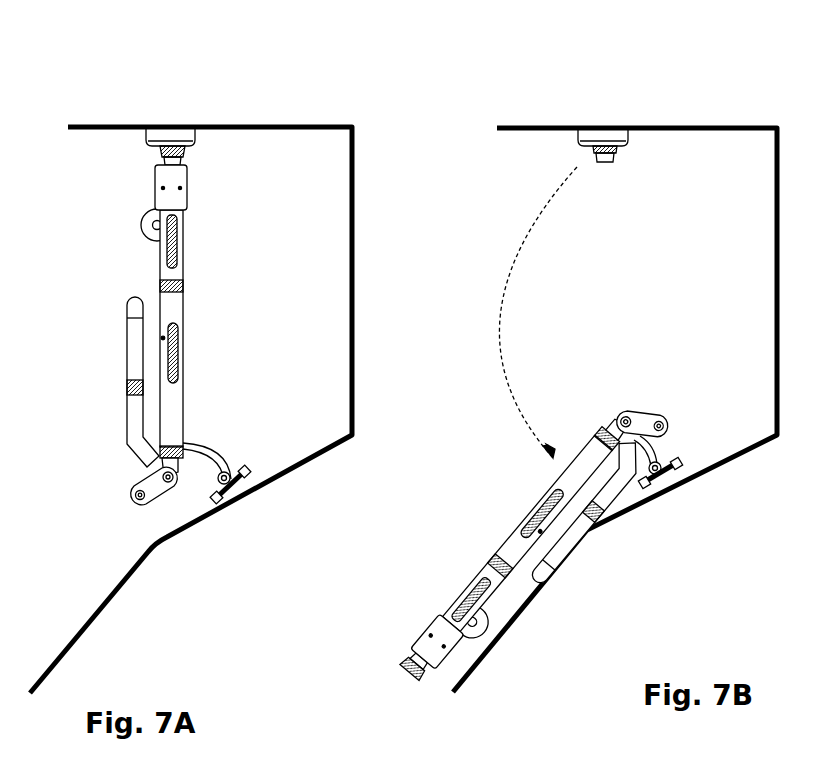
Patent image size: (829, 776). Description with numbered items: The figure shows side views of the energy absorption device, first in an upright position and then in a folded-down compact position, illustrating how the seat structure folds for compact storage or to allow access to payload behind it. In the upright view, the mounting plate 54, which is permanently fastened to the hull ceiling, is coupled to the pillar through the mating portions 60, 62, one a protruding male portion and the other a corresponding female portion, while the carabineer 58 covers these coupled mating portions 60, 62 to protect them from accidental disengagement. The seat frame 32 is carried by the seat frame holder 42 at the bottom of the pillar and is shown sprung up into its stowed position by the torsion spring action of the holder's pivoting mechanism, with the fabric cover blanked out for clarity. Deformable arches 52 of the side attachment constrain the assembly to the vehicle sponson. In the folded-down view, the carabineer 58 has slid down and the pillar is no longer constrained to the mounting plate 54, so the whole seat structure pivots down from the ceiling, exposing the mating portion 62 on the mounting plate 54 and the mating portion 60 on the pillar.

In FIG. 7A, the seat frame 32 is at (131, 456).
In FIG. 7B, the seat frame 32 is at (584, 510).
In FIG. 7A, the seat frame holder 42 is at (168, 488).
In FIG. 7B, the seat frame holder 42 is at (636, 424).
In FIG. 7A, the deformable arches 52 is at (212, 446).
In FIG. 7B, the deformable arches 52 is at (655, 456).
In FIG. 7A, the mounting plate 54 is at (153, 133).
In FIG. 7B, the mounting plate 54 is at (596, 136).
In FIG. 7A, the carabineer 58 is at (185, 193).
In FIG. 7B, the carabineer 58 is at (523, 551).
In FIG. 7A, the mating portion 60 is at (172, 155).
In FIG. 7B, the mating portion 60 is at (413, 660).
In FIG. 7B, the mating portion 62 is at (613, 163).